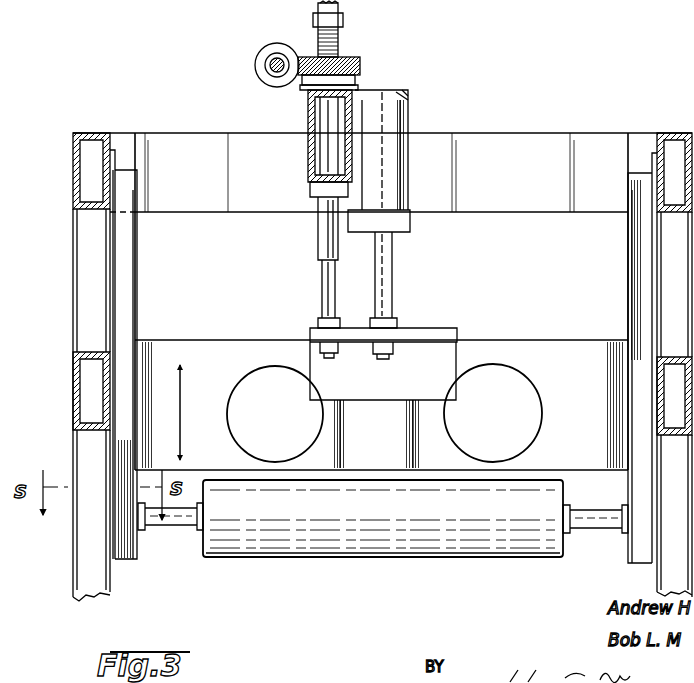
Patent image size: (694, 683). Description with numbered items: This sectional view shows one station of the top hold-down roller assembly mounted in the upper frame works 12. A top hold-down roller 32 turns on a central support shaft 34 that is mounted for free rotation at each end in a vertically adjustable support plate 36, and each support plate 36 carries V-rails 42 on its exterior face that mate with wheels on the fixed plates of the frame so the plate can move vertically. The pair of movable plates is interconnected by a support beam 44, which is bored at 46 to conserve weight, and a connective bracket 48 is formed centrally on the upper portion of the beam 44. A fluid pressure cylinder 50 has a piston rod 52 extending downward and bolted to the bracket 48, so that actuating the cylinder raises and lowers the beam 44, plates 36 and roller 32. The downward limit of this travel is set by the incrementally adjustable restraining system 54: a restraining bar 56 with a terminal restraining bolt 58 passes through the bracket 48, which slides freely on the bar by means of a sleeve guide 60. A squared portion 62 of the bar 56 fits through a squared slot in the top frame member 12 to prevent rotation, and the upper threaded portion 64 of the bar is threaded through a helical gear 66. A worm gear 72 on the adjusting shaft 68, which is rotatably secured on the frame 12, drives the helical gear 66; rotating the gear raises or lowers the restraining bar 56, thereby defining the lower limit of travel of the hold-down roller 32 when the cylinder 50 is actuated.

The upper frame works 12 is at (82, 242).
The top hold-down roller 32 is at (328, 524).
The central support shaft 34 is at (598, 536).
The support plate 36 is at (130, 282).
The V-rail 42 is at (632, 272).
The support beam 44 is at (216, 364).
The bore 46 is at (222, 410).
The connective bracket 48 is at (458, 335).
The fluid pressure cylinder 50 is at (404, 126).
The piston rod 52 is at (392, 283).
The incrementally adjustable restraining system 54 is at (296, 104).
The restraining bar 56 is at (322, 284).
The terminal restraining bolt 58 is at (358, 374).
The sleeve guide 60 is at (316, 324).
The squared portion 62 is at (320, 232).
The threaded portion 64 is at (338, 35).
The helical gear 66 is at (362, 68).
The adjusting shaft 68 is at (270, 58).
The worm gear 72 is at (256, 68).